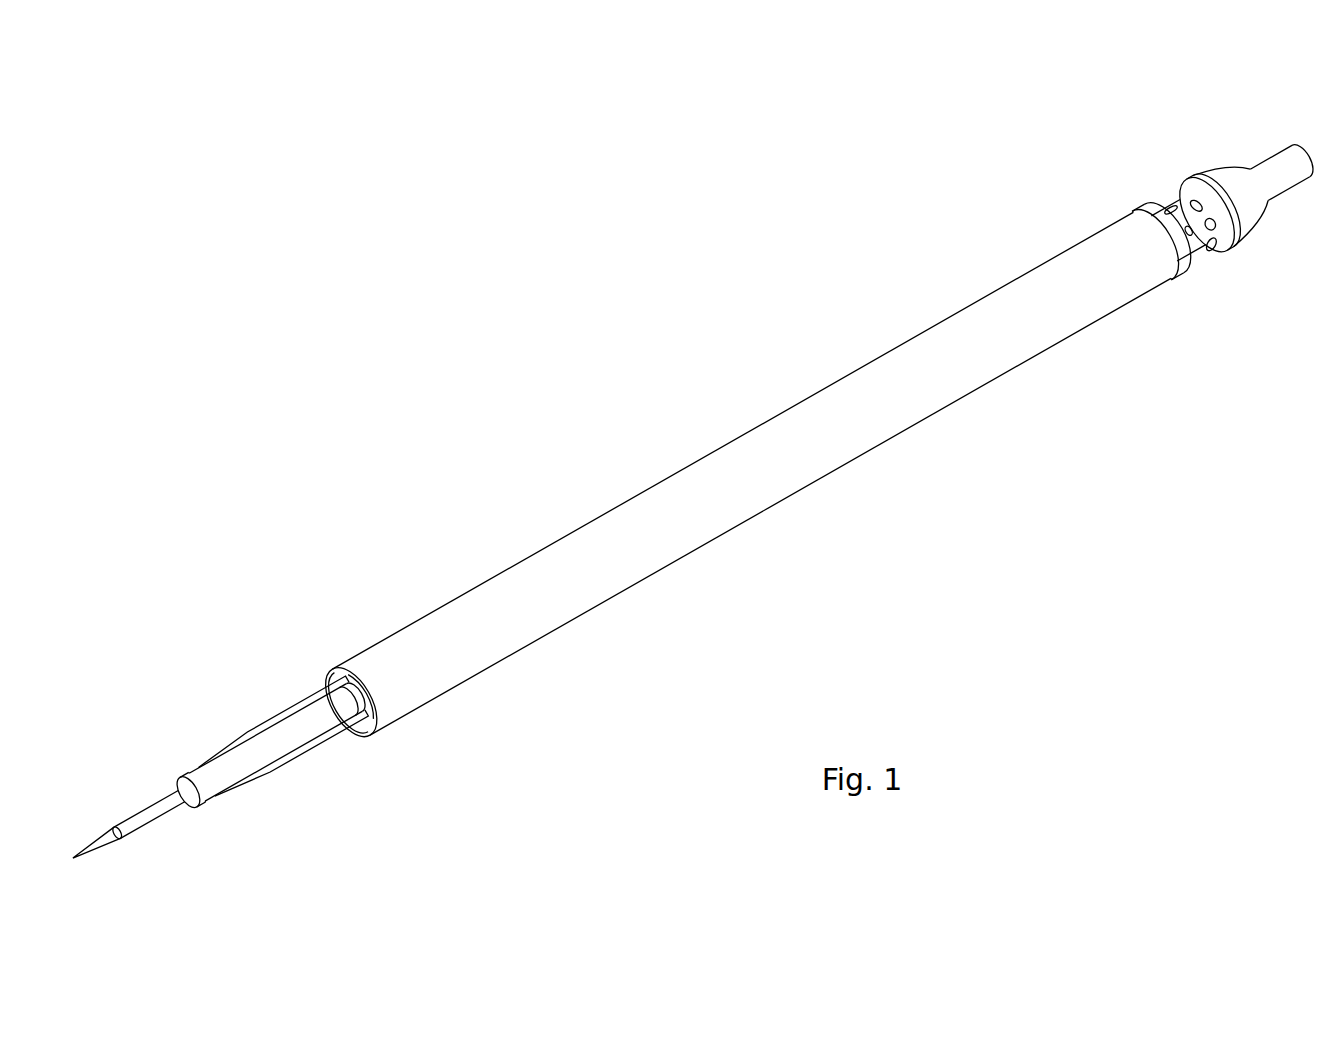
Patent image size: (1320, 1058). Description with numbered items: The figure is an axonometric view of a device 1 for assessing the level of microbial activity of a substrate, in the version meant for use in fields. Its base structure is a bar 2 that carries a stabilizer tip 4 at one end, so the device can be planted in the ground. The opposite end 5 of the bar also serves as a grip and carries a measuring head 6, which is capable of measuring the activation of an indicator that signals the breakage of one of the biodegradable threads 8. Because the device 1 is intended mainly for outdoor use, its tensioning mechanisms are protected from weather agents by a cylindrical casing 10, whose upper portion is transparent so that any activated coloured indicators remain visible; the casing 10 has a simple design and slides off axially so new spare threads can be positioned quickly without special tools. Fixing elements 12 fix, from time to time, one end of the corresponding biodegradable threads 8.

The device 1 is at (694, 481).
The bar 2 is at (333, 707).
The stabilizer tip 4 is at (157, 813).
The opposite end 5 is at (1258, 152).
The measuring head 6 is at (1201, 168).
The biodegradable threads 8 is at (307, 733).
The cylindrical casing 10 is at (798, 428).
The fixing elements 12 is at (187, 777).